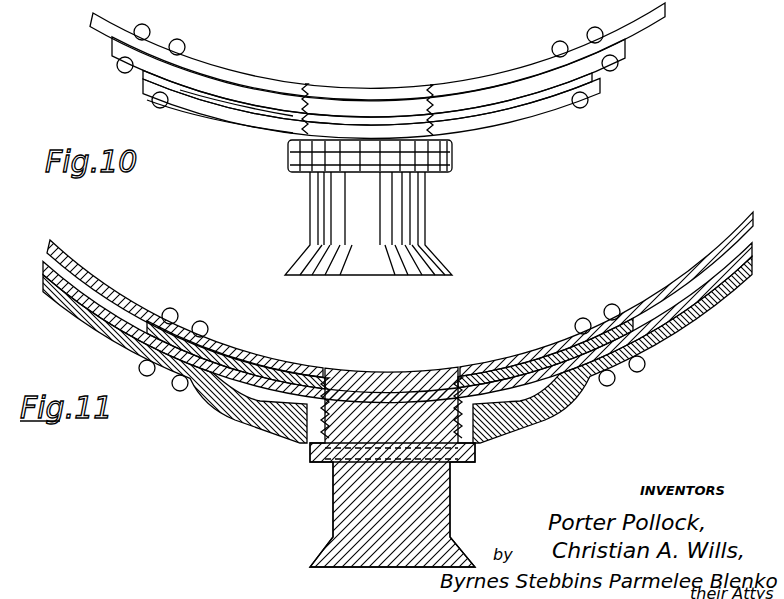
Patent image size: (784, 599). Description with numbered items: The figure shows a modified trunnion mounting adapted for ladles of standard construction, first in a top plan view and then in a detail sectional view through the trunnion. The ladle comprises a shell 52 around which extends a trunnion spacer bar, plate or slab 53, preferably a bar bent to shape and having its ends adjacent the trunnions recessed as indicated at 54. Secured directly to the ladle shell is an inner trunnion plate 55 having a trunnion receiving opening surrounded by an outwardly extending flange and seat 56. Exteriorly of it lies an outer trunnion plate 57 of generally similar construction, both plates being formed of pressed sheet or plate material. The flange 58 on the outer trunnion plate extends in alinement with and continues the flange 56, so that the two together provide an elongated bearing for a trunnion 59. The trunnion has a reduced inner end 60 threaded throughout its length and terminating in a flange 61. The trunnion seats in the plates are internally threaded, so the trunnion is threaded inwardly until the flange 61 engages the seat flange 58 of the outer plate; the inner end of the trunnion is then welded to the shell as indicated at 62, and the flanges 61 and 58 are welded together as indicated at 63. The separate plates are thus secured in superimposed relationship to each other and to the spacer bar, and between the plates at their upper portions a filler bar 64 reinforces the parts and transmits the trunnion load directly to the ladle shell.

In FIG. 10, the shell 52 is at (377, 50).
In FIG. 11, the shell 52 is at (700, 262).
In FIG. 10, the trunnion spacer bar, plate or slab 53 is at (368, 77).
In FIG. 11, the trunnion spacer bar, plate or slab 53 is at (697, 310).
In FIG. 11, the recess 54 is at (637, 332).
In FIG. 10, the inner trunnion plate 55 is at (485, 95).
In FIG. 11, the inner trunnion plate 55 is at (270, 375).
In FIG. 11, the flange and seat 56 is at (475, 378).
In FIG. 10, the outer trunnion plate 57 is at (513, 117).
In FIG. 11, the outer trunnion plate 57 is at (262, 423).
In FIG. 11, the flange 58 is at (477, 433).
In FIG. 10, the trunnion 59 is at (410, 210).
In FIG. 11, the trunnion 59 is at (440, 494).
In FIG. 11, the reduced inner end 60 is at (340, 372).
In FIG. 10, the flange 61 is at (452, 163).
In FIG. 11, the flange 61 is at (310, 462).
In FIG. 10, the weld 62 is at (650, 10).
In FIG. 11, the weld 62 is at (460, 372).
In FIG. 11, the weld 63 is at (310, 446).
In FIG. 10, the filler bar 64 is at (280, 114).